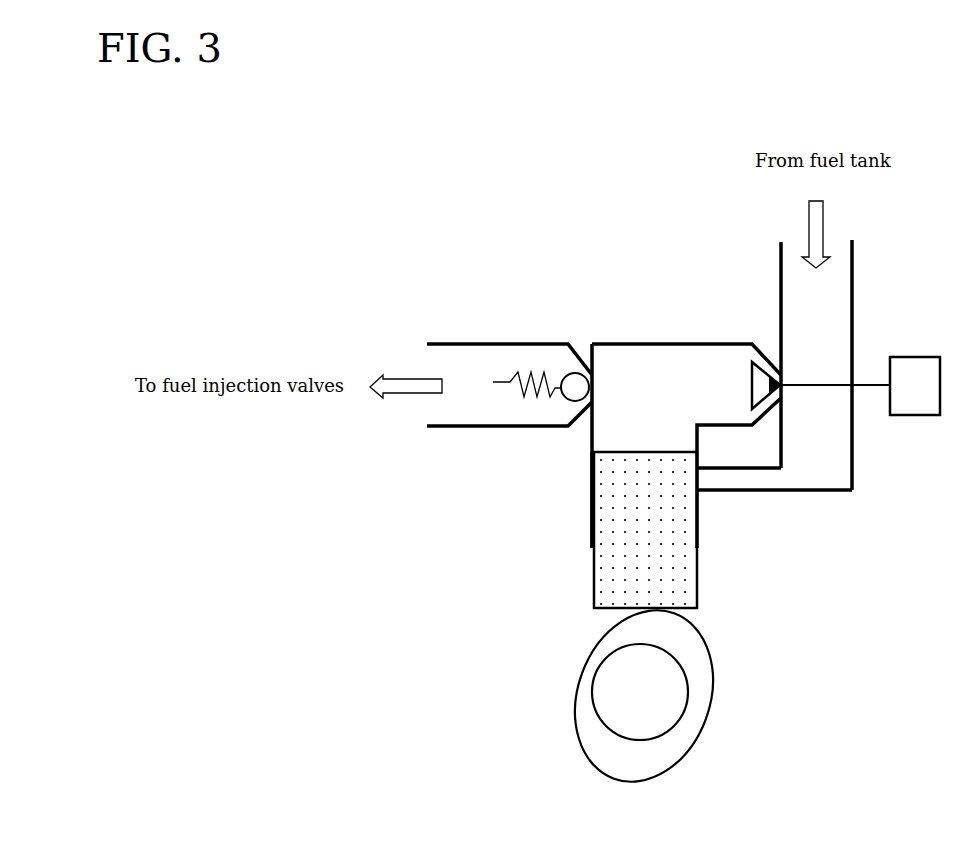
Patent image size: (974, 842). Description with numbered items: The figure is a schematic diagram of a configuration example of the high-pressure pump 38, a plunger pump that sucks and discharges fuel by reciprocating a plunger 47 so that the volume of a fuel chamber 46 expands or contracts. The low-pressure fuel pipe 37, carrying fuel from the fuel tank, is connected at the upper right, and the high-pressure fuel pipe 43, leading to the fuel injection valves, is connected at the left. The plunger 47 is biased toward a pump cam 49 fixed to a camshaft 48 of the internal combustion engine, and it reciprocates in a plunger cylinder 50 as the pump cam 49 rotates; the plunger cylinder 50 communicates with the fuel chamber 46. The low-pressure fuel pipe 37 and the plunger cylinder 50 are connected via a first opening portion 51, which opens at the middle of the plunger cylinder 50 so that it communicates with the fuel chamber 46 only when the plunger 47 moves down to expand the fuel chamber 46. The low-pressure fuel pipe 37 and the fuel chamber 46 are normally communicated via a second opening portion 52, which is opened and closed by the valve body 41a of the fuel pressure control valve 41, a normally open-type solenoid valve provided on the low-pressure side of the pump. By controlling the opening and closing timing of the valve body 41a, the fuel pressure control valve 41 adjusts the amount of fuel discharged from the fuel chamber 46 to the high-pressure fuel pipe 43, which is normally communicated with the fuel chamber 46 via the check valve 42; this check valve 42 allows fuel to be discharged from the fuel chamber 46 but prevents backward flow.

The low-pressure fuel pipe 37 is at (855, 248).
The high-pressure pump 38 is at (645, 195).
The fuel pressure control valve 41 is at (917, 372).
The valve body 41a is at (758, 372).
The check valve 42 is at (575, 395).
The high-pressure fuel pipe 43 is at (447, 343).
The fuel chamber 46 is at (624, 360).
The plunger 47 is at (615, 521).
The camshaft 48 is at (652, 720).
The pump cam 49 is at (685, 657).
The plunger cylinder 50 is at (700, 520).
The first opening portion 51 is at (700, 478).
The second opening portion 52 is at (782, 392).